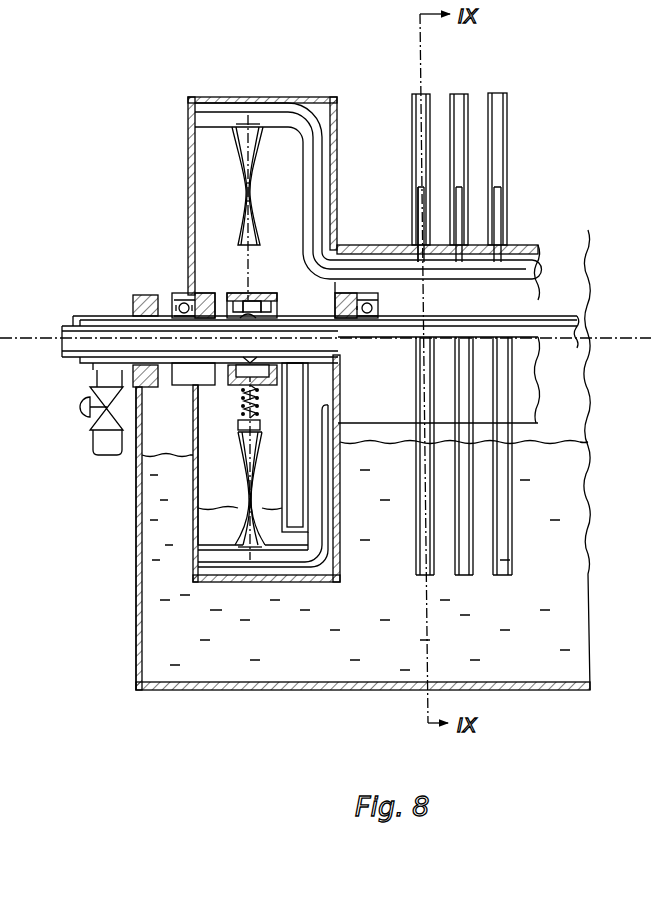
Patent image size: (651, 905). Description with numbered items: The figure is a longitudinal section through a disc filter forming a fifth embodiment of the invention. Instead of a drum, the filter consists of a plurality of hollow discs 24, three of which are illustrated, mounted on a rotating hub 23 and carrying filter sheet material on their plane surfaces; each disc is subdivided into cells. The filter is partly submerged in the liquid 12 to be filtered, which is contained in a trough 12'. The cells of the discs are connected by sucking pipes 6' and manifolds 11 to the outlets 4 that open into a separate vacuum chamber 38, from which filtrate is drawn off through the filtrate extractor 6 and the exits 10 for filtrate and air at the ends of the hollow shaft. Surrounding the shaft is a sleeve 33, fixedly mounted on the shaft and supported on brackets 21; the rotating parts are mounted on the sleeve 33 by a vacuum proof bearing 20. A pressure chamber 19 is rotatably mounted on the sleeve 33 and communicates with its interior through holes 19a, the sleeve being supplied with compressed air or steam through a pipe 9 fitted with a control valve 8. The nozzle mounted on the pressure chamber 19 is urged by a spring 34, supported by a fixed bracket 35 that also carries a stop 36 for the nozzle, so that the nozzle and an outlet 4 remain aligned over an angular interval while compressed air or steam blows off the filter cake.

The filtrate outlet 4 is at (254, 214).
The filtrate extractor 6 is at (285, 447).
The sucking pipe 6' is at (398, 224).
The control valve 8 is at (76, 416).
The pipe 9 is at (108, 456).
The exit 10 is at (70, 347).
The manifold 11 is at (305, 143).
The liquid to be filtered 12 is at (363, 460).
The trough 12' is at (119, 538).
The pressure chamber 19 is at (277, 303).
The holes 19a is at (252, 296).
The vacuum proof bearing 20 is at (174, 293).
The bracket 21 is at (138, 295).
The rotating hub 23 is at (348, 250).
The hollow disc 24 is at (428, 100).
The sleeve 33 is at (100, 316).
The spring 34 is at (242, 404).
The fixed bracket 35 is at (238, 425).
The stop 36 is at (242, 390).
The vacuum chamber 38 is at (228, 462).